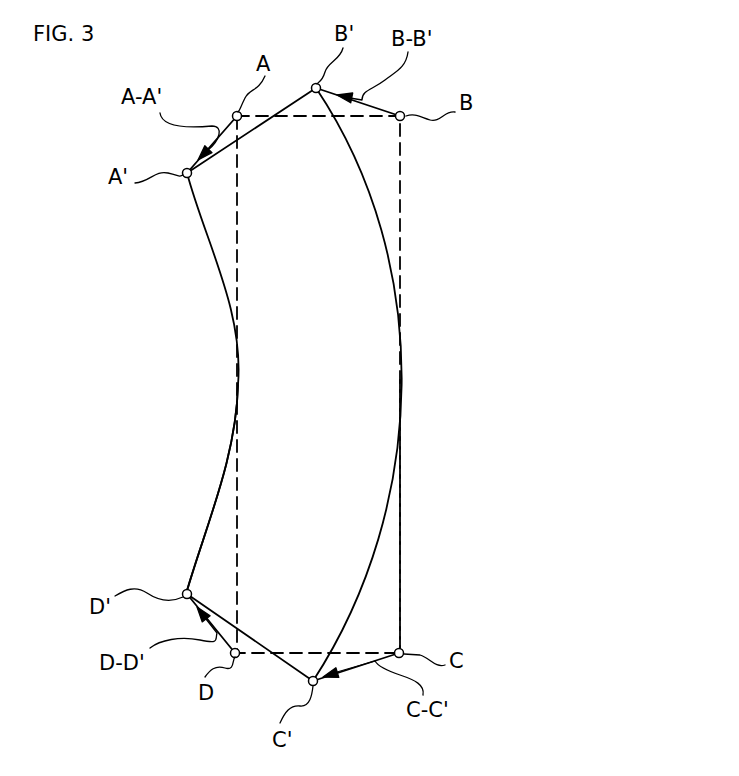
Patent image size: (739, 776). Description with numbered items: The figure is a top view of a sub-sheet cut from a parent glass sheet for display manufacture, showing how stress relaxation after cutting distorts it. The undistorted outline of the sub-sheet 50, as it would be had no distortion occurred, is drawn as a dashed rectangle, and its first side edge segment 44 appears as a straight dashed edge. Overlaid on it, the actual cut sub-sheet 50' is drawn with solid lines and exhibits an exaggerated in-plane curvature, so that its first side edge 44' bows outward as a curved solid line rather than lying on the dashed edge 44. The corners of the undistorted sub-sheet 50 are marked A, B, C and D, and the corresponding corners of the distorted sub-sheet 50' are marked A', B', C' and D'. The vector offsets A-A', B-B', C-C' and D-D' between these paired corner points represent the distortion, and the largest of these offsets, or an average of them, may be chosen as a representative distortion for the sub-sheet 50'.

The first side edge segment 44 is at (320, 384).
The distorted first side edge segment 44' is at (188, 383).
The sub-sheet 50 is at (483, 516).
The distorted sub-sheet 50' is at (165, 489).